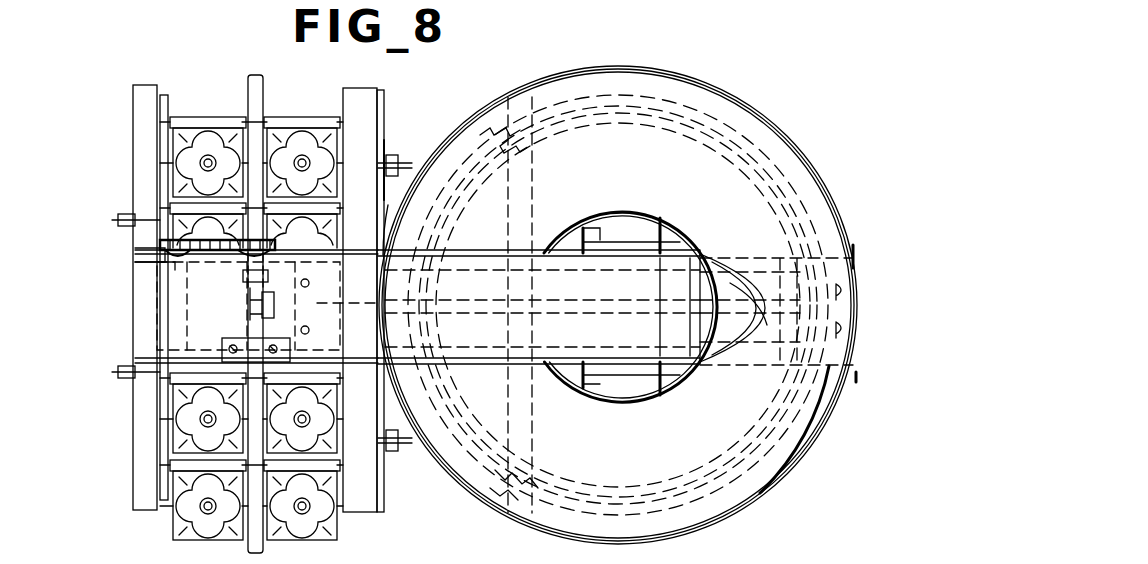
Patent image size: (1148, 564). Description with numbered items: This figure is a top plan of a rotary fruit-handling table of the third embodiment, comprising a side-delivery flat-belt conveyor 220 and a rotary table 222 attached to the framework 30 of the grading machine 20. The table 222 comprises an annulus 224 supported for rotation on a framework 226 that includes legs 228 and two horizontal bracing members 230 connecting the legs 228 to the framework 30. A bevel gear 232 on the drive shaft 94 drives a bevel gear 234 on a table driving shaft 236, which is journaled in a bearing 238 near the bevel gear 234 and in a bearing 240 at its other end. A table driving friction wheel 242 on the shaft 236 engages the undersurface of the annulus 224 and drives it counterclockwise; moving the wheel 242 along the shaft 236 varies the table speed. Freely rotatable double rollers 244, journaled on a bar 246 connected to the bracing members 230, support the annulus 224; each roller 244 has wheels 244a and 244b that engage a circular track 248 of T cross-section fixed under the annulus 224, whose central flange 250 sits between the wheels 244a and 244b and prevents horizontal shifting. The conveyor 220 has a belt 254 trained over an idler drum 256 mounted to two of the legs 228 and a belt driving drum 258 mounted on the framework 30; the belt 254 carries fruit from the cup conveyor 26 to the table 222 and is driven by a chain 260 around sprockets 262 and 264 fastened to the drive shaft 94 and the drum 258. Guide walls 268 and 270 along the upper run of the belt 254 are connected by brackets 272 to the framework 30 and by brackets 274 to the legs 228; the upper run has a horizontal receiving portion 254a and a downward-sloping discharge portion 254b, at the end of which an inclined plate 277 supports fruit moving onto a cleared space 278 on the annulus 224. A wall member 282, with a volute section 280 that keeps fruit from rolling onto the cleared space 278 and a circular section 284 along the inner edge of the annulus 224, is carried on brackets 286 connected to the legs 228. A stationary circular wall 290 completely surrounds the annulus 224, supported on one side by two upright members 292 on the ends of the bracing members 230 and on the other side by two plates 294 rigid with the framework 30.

The grading machine 20 is at (177, 74).
The cup conveyor 26 is at (312, 100).
The framework 30 is at (396, 135).
The drive shaft 94 is at (258, 92).
The side-delivery flat-belt conveyor 220 is at (471, 246).
The rotary table 222 is at (748, 91).
The annulus 224 is at (686, 170).
The framework 226 is at (681, 224).
The legs 228 is at (590, 232).
The horizontal bracing members 230 is at (330, 258).
The bevel gear 232 is at (258, 296).
The bevel gear 234 is at (256, 312).
The table driving shaft 236 is at (512, 315).
The bearing 238 is at (326, 303).
The bearing 240 is at (792, 348).
The table driving friction wheel 242 is at (792, 358).
The double rollers 244 is at (552, 144).
The wheel 244a is at (538, 114).
The wheel 244b is at (558, 136).
The bar 246 is at (510, 402).
The circular track 248 is at (560, 500).
The central flange 250 is at (728, 480).
The belt 254 is at (474, 291).
The receiving portion 254a is at (175, 322).
The discharge portion 254b is at (630, 291).
The idler drum 256 is at (655, 318).
The belt driving drum 258 is at (170, 265).
The chain 260 is at (190, 246).
The sprocket 262 is at (268, 248).
The sprocket 264 is at (165, 252).
The guide wall 268 is at (514, 250).
The guide wall 270 is at (538, 360).
The brackets 272 is at (112, 352).
The brackets 274 is at (590, 243).
The inclined plate 277 is at (712, 262).
The cleared space 278 is at (733, 278).
The volute section 280 is at (748, 302).
The wall member 282 is at (604, 405).
The circular section 284 is at (620, 218).
The brackets 286 is at (582, 226).
The stationary circular wall 290 is at (668, 70).
The upright members 292 is at (853, 248).
The plates 294 is at (395, 164).